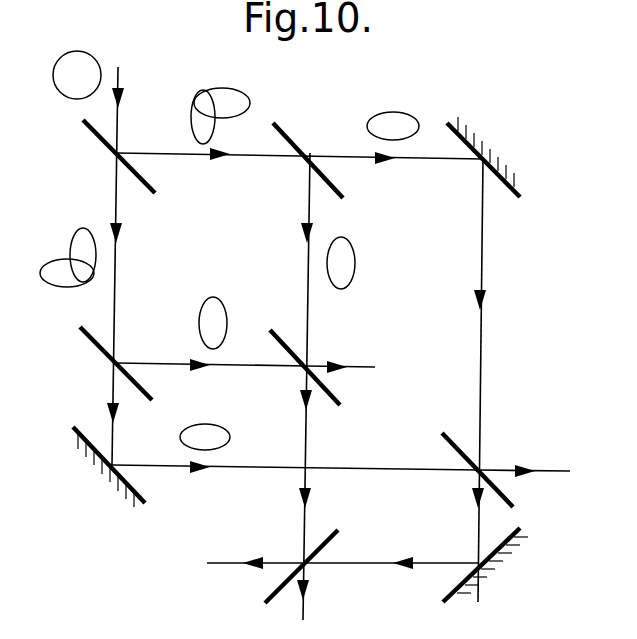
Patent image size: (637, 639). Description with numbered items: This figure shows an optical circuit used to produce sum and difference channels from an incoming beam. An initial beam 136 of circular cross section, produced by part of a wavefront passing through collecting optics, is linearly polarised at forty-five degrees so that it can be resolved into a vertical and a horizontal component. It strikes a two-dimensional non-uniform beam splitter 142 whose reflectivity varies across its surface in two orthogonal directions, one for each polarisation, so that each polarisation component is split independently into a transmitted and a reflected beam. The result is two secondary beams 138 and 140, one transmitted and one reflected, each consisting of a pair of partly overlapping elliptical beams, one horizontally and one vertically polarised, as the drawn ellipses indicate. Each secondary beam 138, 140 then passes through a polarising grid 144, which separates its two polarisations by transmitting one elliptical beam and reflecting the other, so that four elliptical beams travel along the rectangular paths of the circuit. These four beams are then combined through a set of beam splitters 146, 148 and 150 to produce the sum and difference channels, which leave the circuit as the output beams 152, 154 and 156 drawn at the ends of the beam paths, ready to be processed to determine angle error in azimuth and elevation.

The initial beam 136 is at (102, 77).
The secondary beam 138 is at (114, 318).
The secondary beam 140 is at (267, 153).
The two-dimensional non-uniform beam splitter 142 is at (105, 143).
The polarising grid 144 is at (283, 128).
The beam splitter 146 is at (330, 392).
The beam splitter 148 is at (333, 538).
The beam splitter 150 is at (510, 500).
The output beam 152 is at (207, 563).
The output beam 154 is at (352, 366).
The output beam 156 is at (545, 470).